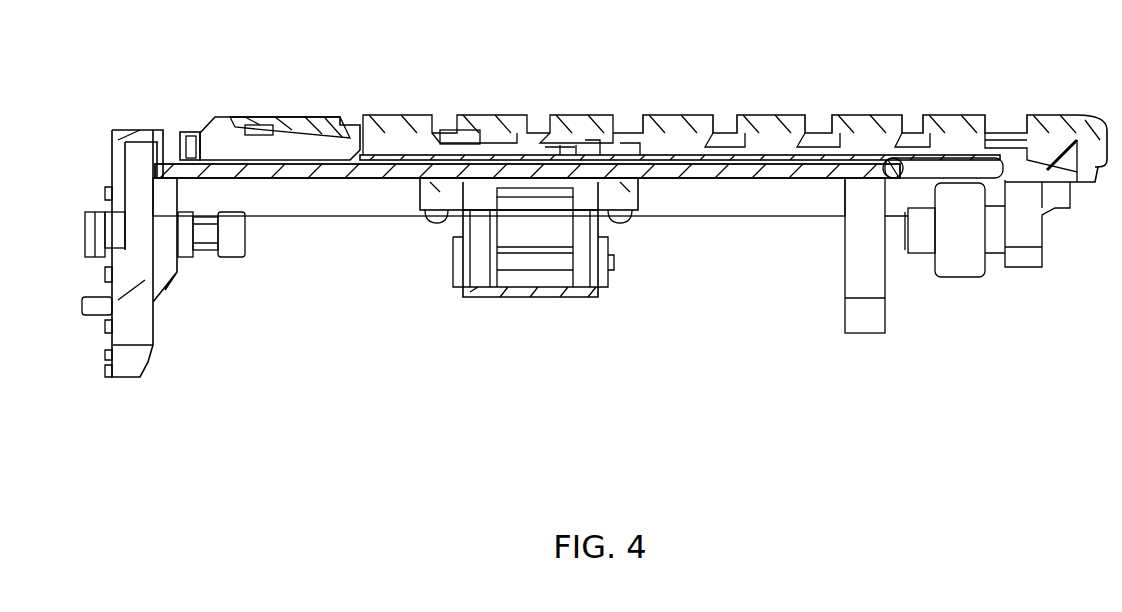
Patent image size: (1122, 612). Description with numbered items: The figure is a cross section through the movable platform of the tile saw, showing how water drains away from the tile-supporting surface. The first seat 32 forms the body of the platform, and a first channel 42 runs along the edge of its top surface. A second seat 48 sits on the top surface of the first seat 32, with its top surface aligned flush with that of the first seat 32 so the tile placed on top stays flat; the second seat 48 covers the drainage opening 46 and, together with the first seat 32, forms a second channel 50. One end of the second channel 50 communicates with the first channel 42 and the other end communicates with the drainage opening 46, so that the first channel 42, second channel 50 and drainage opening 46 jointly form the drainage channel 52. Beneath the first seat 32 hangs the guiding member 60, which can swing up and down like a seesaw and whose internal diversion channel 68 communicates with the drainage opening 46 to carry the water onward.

The first seat 32 is at (102, 120).
The first channel 42 is at (189, 146).
The drainage opening 46 is at (548, 172).
The second seat 48 is at (787, 107).
The second channel 50 is at (441, 164).
The drainage channel 52 is at (588, 50).
The guiding member 60 is at (529, 288).
The diversion channel 68 is at (532, 237).